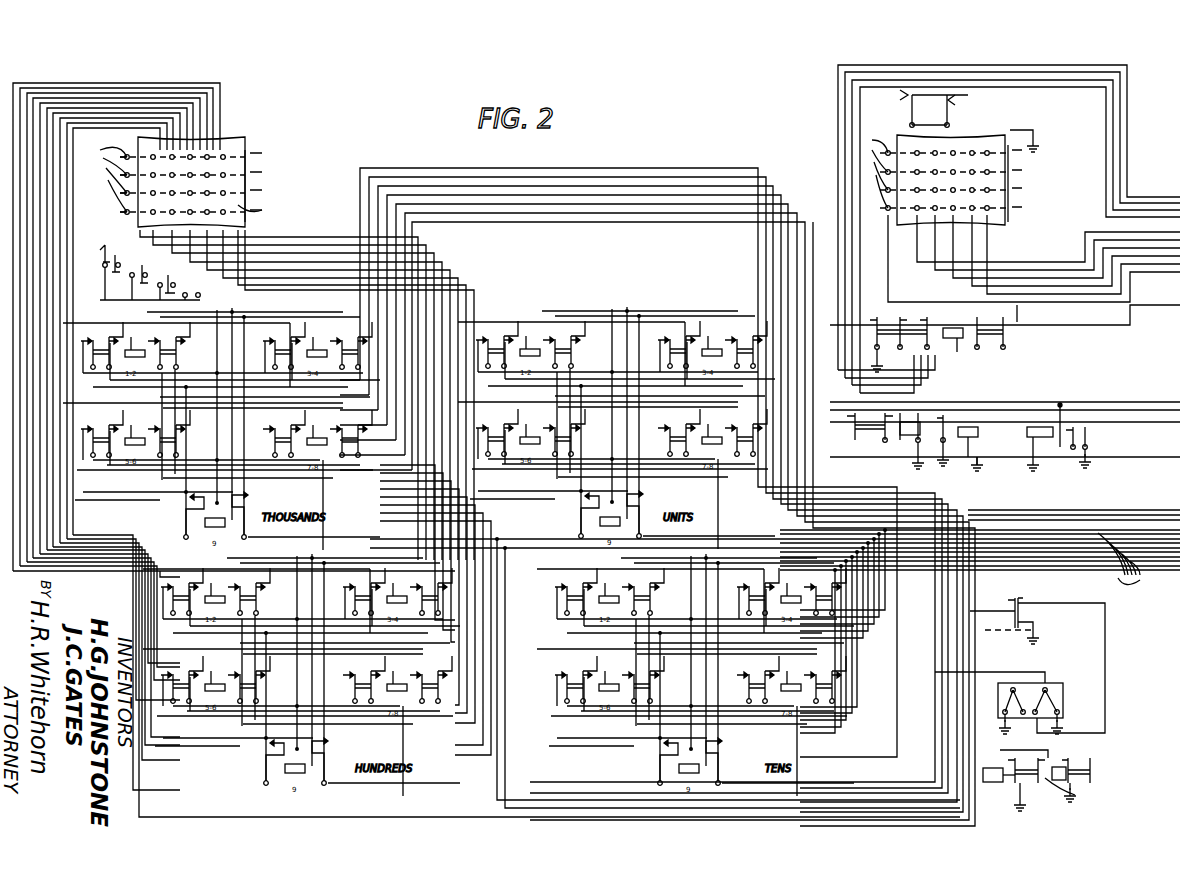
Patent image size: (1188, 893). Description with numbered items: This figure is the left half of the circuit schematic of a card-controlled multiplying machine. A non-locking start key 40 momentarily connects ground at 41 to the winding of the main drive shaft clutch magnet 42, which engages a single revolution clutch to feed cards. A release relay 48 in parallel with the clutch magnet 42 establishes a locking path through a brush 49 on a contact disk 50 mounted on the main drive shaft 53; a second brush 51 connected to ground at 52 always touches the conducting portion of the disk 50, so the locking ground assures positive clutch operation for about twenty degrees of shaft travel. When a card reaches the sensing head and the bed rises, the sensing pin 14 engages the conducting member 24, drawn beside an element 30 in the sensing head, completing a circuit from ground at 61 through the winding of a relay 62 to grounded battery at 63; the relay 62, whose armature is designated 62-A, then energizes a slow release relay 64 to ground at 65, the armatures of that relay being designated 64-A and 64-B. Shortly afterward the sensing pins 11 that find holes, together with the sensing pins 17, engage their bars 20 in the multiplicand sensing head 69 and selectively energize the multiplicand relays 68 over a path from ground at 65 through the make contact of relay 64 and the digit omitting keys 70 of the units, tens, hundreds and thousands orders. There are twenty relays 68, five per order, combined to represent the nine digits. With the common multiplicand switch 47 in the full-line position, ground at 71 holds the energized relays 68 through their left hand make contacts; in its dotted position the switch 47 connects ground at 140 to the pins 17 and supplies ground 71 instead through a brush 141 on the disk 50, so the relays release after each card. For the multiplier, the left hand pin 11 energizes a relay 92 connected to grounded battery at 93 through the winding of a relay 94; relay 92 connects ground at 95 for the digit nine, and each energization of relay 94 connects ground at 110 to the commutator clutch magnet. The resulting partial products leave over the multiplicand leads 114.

The sensing pins 11 is at (205, 152).
The sensing pins 17 is at (484, 162).
The bars 20 is at (248, 150).
The multiplicand sensing head 69 is at (262, 210).
The digit omitting keys 70 is at (195, 300).
The multiplicand relays 68 is at (131, 337).
The contact 30 is at (902, 98).
The conducting member 24 is at (939, 111).
The sensing pin 14 is at (960, 102).
The ground 61 is at (1040, 145).
The ground 95 is at (883, 362).
The relay 92 is at (957, 352).
The release relay 48 is at (900, 442).
The ground 110 is at (948, 463).
The relay 94 is at (978, 432).
The grounded battery 93 is at (985, 468).
The main drive shaft clutch magnet 42 is at (1045, 438).
The start key 40 is at (1090, 437).
The ground 41 is at (1092, 468).
The brush 49 is at (1005, 605).
The contact disk 50 is at (1040, 588).
The brush 141 is at (1023, 603).
The brush 51 is at (1033, 622).
The main drive shaft 53 is at (1005, 632).
The ground 52 is at (1030, 645).
The common multiplicand switch 47 is at (1052, 683).
The ground 140 is at (1000, 730).
The ground 71 is at (1063, 730).
The relay 62 is at (983, 775).
The armature of relay 62 62-A is at (1030, 785).
The grounded battery 63 is at (1015, 800).
The slow release relay 64 is at (1075, 757).
The armature of relay 64 64-B is at (1095, 770).
The ground 65 is at (1075, 797).
The armature of relay 64 64-A is at (1050, 786).
The multiplicand leads 114 is at (1130, 562).